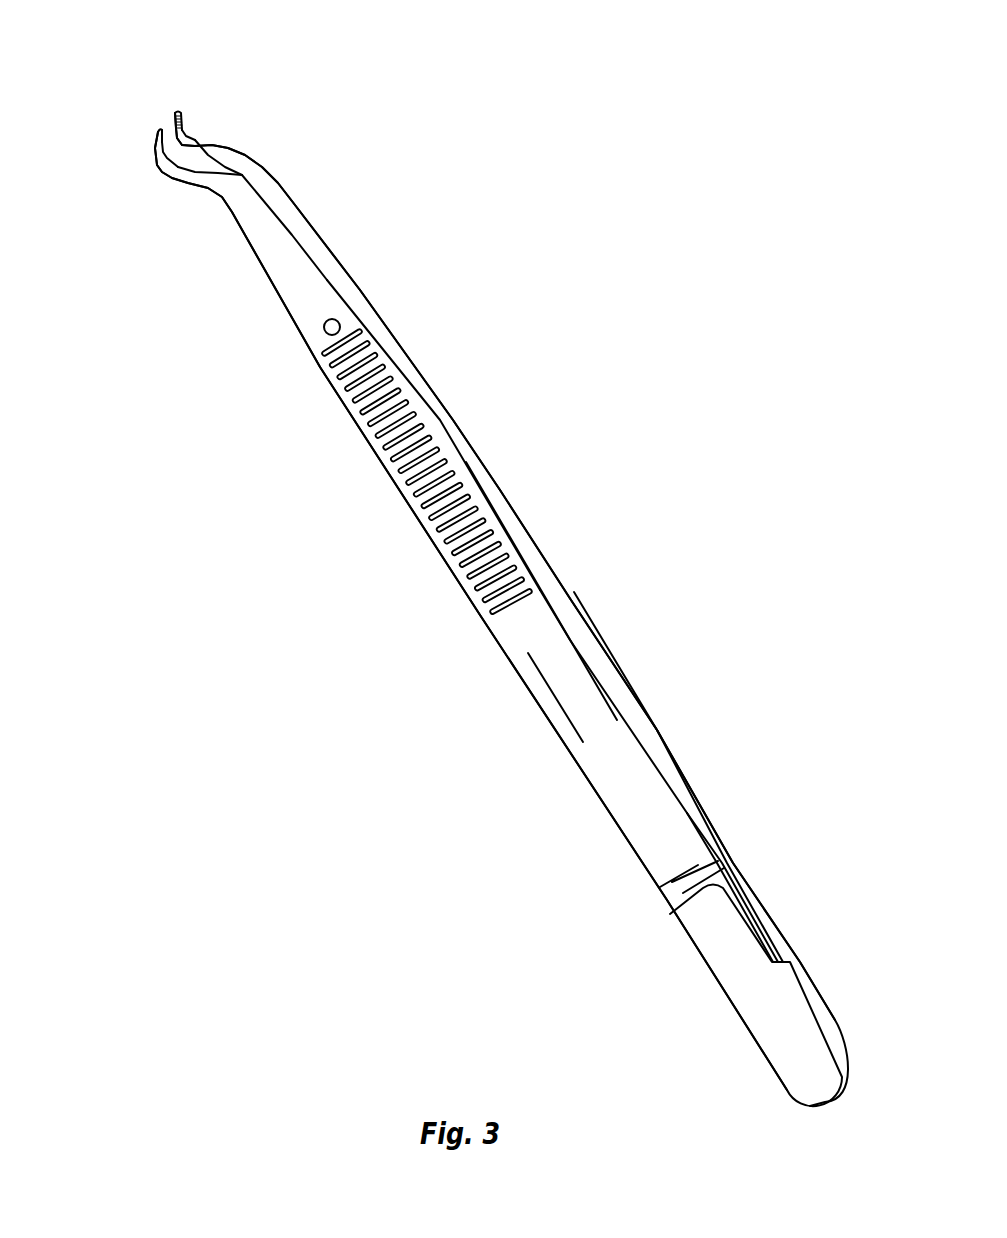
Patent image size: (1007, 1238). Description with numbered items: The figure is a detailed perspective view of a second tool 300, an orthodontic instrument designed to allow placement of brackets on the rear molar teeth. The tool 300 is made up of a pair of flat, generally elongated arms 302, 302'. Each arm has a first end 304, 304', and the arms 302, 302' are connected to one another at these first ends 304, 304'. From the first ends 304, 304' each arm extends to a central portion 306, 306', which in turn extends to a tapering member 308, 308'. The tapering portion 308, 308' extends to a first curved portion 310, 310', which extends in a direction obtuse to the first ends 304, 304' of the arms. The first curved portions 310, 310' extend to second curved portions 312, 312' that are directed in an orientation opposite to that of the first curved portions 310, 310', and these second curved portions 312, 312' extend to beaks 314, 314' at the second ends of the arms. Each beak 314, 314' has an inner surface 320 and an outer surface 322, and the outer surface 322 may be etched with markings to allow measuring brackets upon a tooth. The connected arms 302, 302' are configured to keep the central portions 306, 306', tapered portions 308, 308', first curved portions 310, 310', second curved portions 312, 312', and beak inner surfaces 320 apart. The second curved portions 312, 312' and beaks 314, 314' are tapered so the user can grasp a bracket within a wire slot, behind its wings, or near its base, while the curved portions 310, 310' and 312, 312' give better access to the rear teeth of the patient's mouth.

The second tool 300 is at (323, 609).
The arm 302 is at (427, 502).
The arm 302' is at (647, 661).
The first end 304 is at (751, 961).
The first end 304' is at (795, 918).
The central portion 306 is at (556, 745).
The central portion 306' is at (570, 596).
The tapering member 308 is at (385, 447).
The tapering member 308' is at (430, 363).
The first curved portion 310 is at (243, 271).
The first curved portion 310' is at (297, 213).
The second curved portion 312 is at (178, 214).
The second curved portion 312' is at (227, 124).
The beak 314 is at (102, 141).
The beak 314' is at (141, 104).
The inner surface 320 is at (179, 114).
The outer surface 322 is at (154, 153).